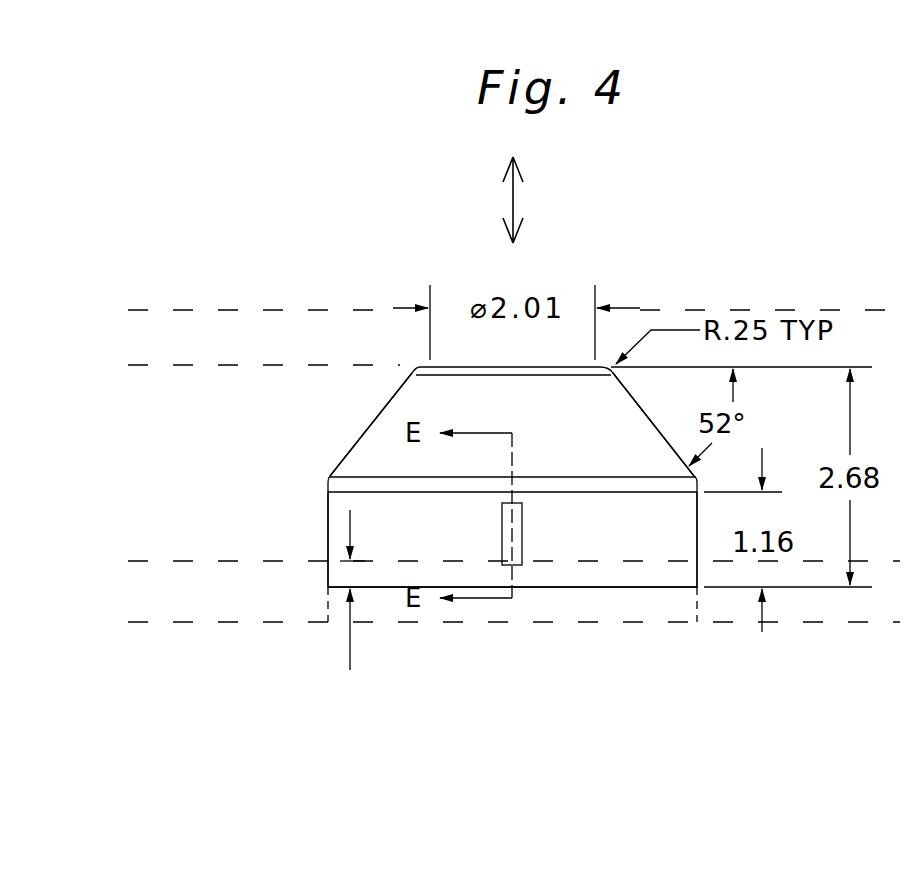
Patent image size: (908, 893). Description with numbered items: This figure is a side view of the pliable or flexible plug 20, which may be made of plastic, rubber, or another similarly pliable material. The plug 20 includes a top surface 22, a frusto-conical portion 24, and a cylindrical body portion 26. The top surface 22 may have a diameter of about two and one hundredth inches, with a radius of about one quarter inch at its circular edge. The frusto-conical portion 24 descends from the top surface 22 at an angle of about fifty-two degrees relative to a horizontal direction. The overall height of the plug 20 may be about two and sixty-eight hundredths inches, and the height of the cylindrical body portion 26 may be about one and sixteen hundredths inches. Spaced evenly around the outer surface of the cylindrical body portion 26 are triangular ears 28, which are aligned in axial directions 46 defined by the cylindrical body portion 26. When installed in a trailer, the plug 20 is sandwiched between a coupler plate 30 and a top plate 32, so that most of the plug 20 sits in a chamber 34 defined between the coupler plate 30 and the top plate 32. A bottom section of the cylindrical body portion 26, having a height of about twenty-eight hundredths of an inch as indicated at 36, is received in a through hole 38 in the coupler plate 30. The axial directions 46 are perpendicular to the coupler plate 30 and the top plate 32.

The plug 20 is at (672, 214).
The top surface 22 is at (505, 365).
The frusto-conical portion 24 is at (622, 443).
The cylindrical body portion 26 is at (632, 543).
The triangular ears 28 is at (518, 565).
The coupler plate 30 is at (218, 585).
The top plate 32 is at (218, 343).
The chamber 34 is at (178, 508).
The height of bottom section 36 is at (345, 578).
The through hole 38 is at (694, 600).
The axial directions 46 is at (512, 200).